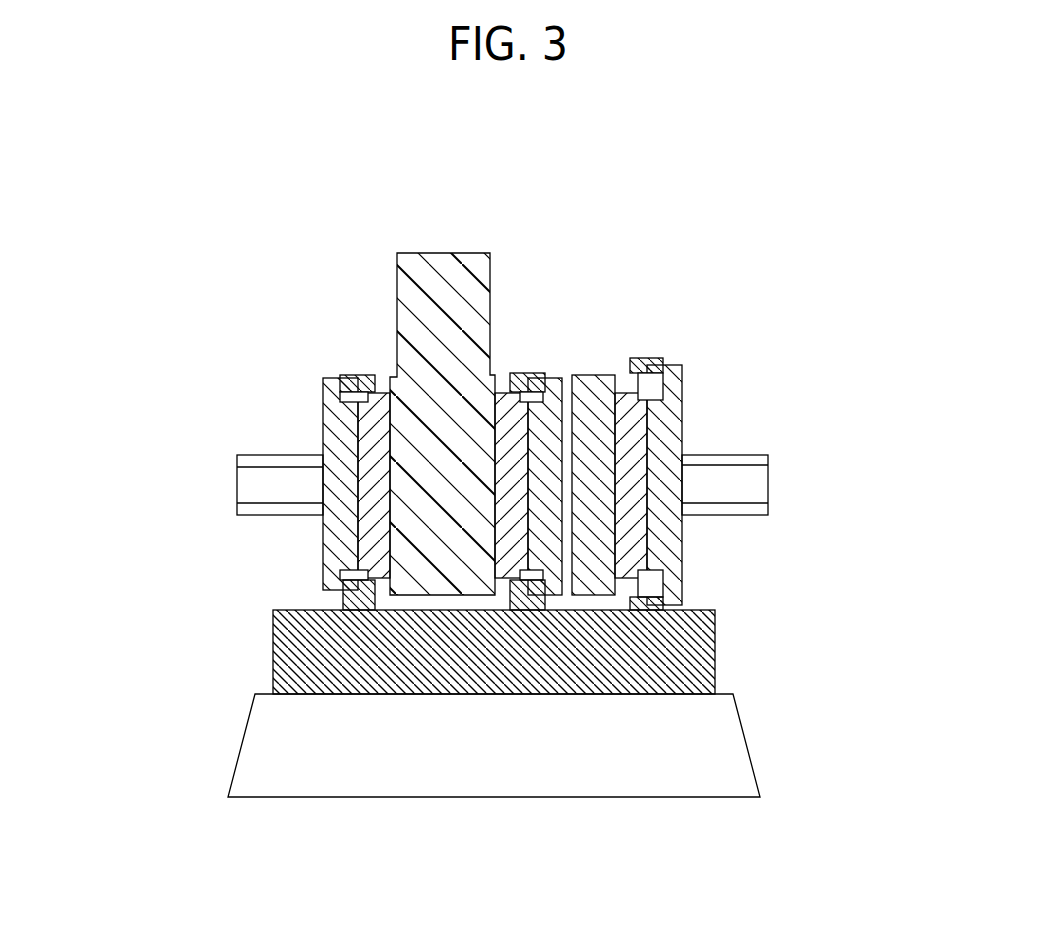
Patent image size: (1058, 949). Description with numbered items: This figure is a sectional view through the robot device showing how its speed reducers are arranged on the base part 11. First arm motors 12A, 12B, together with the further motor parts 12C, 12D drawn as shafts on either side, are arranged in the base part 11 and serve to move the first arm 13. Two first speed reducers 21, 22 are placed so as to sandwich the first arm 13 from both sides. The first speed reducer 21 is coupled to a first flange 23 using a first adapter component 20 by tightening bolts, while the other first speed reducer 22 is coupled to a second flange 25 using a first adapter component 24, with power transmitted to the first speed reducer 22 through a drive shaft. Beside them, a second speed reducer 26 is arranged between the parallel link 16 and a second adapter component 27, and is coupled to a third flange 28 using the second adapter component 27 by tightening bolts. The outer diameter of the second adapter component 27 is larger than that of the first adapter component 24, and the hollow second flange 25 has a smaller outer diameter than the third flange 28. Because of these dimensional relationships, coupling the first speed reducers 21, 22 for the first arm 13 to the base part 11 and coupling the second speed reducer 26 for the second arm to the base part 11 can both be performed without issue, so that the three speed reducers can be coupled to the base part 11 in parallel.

The base part 11 is at (697, 660).
The first arm motor 12A is at (189, 485).
The first arm motor 12B is at (253, 487).
The shaft 12C is at (812, 485).
The shaft 12D is at (757, 487).
The first arm 13 is at (443, 268).
The parallel link 16 is at (590, 377).
The first adapter component 20 is at (330, 410).
The first speed reducer 21 is at (380, 542).
The first speed reducer 22 is at (500, 393).
The first flange 23 is at (363, 373).
The first adapter component 24 is at (550, 378).
The second flange 25 is at (530, 377).
The second speed reducer 26 is at (617, 393).
The second adapter component 27 is at (673, 367).
The third flange 28 is at (643, 367).